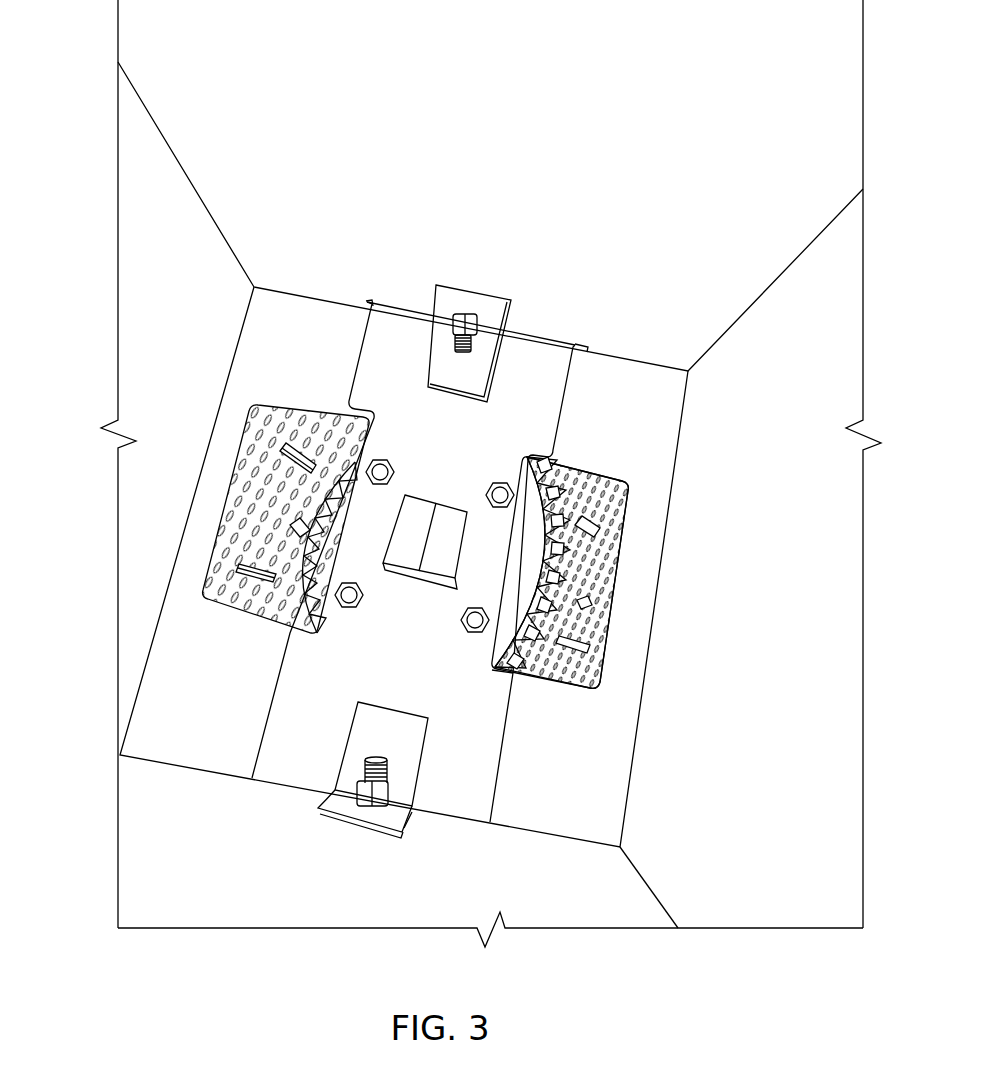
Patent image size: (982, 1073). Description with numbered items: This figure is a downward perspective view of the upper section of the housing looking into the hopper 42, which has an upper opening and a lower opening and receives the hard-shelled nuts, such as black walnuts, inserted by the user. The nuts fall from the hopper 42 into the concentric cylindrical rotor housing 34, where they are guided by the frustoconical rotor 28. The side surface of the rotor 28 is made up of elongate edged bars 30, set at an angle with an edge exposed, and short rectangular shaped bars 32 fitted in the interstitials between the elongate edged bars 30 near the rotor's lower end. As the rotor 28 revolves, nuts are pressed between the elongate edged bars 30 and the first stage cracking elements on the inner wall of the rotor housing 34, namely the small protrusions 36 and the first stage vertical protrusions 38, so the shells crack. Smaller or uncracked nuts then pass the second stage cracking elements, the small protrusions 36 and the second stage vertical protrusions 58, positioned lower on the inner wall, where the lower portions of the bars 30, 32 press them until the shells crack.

The rotor 28 is at (525, 545).
The elongate edged bars 30 is at (560, 558).
The short rectangular shaped bars 32 is at (548, 520).
The concentric cylindrical rotor housing 34 is at (614, 588).
The small protrusions 36 is at (203, 485).
The first stage vertical protrusions 38 is at (288, 442).
The hopper 42 is at (203, 191).
The second stage vertical protrusions 58 is at (298, 523).